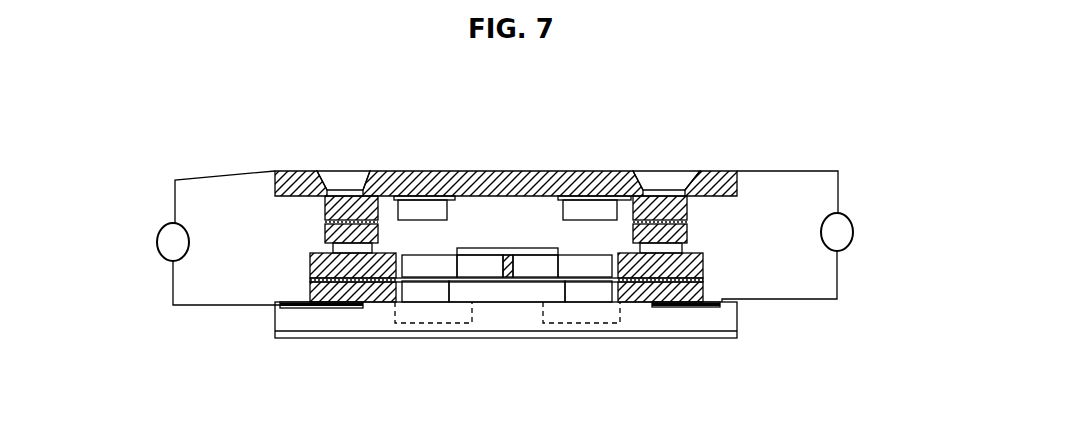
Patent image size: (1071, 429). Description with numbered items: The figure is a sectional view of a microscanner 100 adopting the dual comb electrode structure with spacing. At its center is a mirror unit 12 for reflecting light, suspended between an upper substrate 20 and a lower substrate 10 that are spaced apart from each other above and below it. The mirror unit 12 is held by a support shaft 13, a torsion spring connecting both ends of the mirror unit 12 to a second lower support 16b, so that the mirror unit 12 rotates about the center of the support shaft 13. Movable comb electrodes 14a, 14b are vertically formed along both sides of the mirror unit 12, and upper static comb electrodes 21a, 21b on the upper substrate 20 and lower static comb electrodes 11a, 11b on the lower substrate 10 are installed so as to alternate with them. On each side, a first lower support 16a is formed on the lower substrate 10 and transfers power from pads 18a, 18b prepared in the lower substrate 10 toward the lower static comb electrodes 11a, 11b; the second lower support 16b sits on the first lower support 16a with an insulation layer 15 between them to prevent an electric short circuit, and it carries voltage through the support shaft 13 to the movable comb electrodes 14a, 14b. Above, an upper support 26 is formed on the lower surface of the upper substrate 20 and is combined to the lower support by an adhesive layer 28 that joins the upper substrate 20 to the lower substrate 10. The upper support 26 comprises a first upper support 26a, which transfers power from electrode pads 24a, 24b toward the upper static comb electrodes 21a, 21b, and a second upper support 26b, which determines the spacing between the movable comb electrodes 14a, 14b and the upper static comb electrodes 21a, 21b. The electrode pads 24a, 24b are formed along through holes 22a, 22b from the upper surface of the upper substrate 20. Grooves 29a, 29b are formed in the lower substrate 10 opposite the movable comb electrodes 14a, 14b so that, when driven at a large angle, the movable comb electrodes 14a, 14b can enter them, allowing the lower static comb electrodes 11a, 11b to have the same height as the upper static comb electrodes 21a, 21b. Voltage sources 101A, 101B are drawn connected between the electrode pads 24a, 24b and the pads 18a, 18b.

The lower substrate 10 is at (724, 314).
The lower static comb electrode 11a is at (432, 292).
The lower static comb electrode 11b is at (585, 292).
The mirror unit 12 is at (507, 252).
The support shaft 13 is at (507, 282).
The movable comb electrode 14a is at (412, 265).
The movable comb electrode 14b is at (598, 265).
The insulation layer 15 is at (704, 279).
The first lower support 16a is at (310, 293).
The second lower support 16b is at (704, 264).
The pad 18a is at (278, 305).
The pad 18b is at (725, 300).
The upper substrate 20 is at (553, 186).
The upper static comb electrode 21a is at (430, 221).
The upper static comb electrode 21b is at (582, 220).
The through hole 22a is at (347, 169).
The through hole 22b is at (662, 169).
The electrode pad 24a is at (283, 171).
The electrode pad 24b is at (716, 171).
The upper support 26 is at (315, 223).
The adhesive layer 28 is at (330, 246).
The first upper support 26a is at (688, 207).
The second upper support 26b is at (688, 229).
The groove 29a is at (458, 312).
The groove 29b is at (555, 312).
The microscanner 100 is at (494, 393).
The first voltmeter 101A is at (834, 236).
The second voltmeter 101B is at (171, 238).